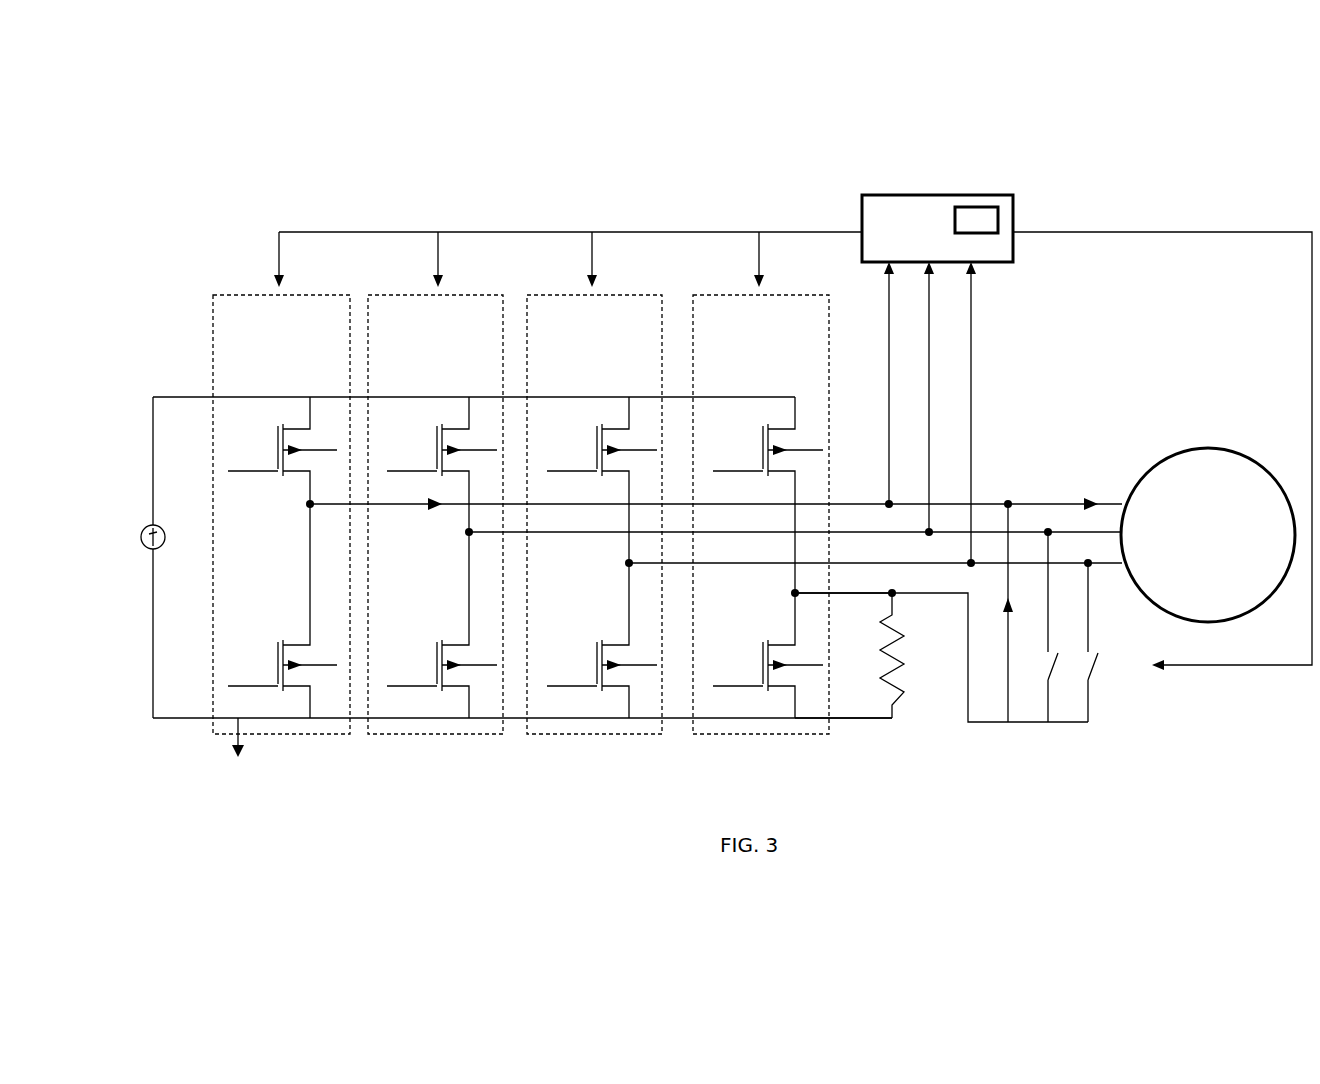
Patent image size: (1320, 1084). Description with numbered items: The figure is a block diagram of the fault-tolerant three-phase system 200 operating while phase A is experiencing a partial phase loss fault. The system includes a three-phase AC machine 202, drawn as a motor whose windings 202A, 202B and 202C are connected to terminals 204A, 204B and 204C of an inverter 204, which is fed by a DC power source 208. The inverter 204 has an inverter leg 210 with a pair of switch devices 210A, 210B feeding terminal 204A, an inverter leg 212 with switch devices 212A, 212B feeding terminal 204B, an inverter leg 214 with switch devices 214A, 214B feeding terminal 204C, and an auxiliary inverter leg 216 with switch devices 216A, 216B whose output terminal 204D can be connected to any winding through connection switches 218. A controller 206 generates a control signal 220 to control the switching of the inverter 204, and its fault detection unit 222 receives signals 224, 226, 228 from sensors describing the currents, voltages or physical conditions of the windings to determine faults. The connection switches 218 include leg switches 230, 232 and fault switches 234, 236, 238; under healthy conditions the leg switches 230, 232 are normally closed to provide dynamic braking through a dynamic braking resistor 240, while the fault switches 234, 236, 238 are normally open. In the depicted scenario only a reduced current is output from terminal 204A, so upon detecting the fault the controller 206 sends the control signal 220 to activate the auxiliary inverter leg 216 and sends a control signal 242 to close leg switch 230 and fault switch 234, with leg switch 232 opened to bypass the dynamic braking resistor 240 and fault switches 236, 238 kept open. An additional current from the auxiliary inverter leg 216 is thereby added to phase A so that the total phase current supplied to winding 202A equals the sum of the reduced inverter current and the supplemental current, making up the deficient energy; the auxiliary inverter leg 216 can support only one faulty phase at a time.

The fault-tolerant three-phase system 200 is at (195, 290).
The three-phase AC machine 202 is at (1200, 448).
The winding 202A is at (1025, 504).
The winding 202B is at (1110, 520).
The winding 202C is at (1095, 575).
The inverter 204 is at (188, 397).
The terminal 204A is at (305, 507).
The terminal 204B is at (466, 535).
The terminal 204C is at (625, 563).
The terminal 204D is at (792, 597).
The controller 206 is at (920, 195).
The DC power source 208 is at (134, 561).
The inverter leg 210 is at (233, 295).
The switch device 210A is at (288, 410).
The switch device 210B is at (278, 640).
The inverter leg 212 is at (393, 295).
The switch device 212A is at (452, 408).
The switch device 212B is at (437, 640).
The inverter leg 214 is at (540, 295).
The switch device 214A is at (610, 408).
The switch device 214B is at (595, 640).
The auxiliary inverter leg 216 is at (810, 295).
The switch device 216A is at (765, 427).
The switch device 216B is at (750, 692).
The connection switches 218 is at (960, 745).
The control signal 220 is at (655, 232).
The fault detection unit 222 is at (985, 207).
The signal 224 is at (886, 335).
The signal 226 is at (932, 365).
The signal 228 is at (974, 330).
The leg switch 230 is at (848, 597).
The leg switch 232 is at (895, 638).
The fault switch 234 is at (1012, 690).
The fault switch 236 is at (1060, 665).
The fault switch 238 is at (1100, 660).
The dynamic braking resistor 240 is at (900, 712).
The control signal 242 is at (1162, 451).